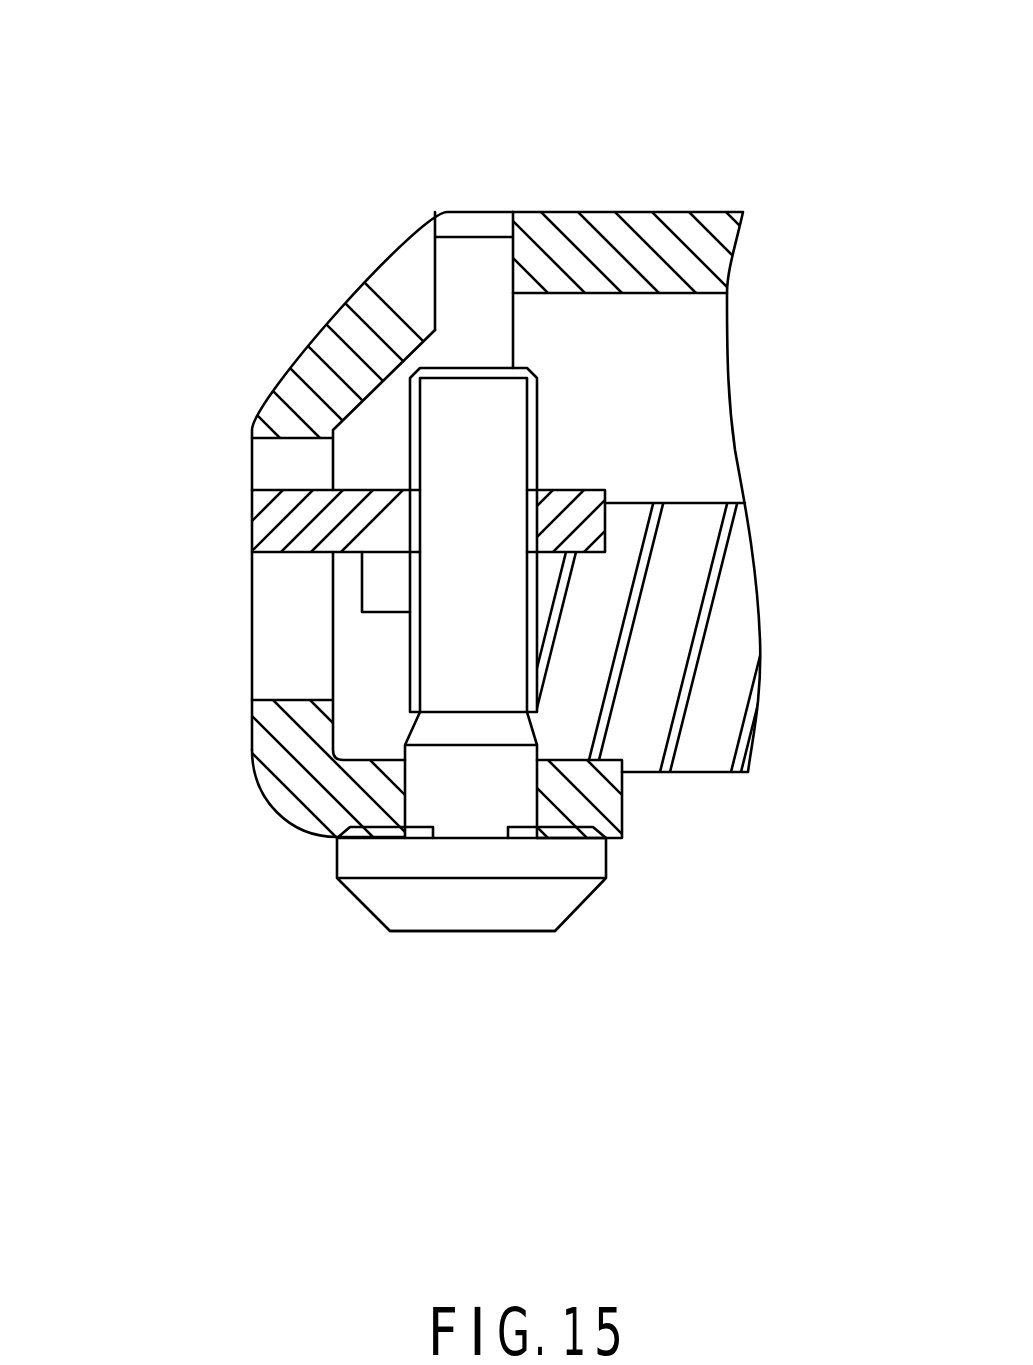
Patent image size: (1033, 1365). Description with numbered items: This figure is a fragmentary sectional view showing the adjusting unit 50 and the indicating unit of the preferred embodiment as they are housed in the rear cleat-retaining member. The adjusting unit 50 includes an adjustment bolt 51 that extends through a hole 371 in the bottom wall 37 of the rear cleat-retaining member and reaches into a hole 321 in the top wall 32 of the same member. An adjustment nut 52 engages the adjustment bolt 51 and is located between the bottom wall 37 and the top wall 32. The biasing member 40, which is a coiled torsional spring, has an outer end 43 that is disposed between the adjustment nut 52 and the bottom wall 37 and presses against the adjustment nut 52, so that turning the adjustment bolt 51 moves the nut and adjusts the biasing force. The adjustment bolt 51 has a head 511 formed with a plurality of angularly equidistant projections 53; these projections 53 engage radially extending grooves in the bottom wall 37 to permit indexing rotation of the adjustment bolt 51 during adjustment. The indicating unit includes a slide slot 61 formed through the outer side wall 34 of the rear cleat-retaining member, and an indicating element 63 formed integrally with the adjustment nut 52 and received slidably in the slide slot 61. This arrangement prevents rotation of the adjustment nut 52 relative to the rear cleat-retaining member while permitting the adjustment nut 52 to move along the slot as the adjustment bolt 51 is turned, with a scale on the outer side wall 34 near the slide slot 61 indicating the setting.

The top wall 32 is at (683, 215).
The hole 321 is at (470, 225).
The adjustment bolt 51 is at (520, 405).
The adjustment nut 52 is at (597, 503).
The indicating element 63 is at (255, 525).
The outer end 43 is at (368, 600).
The slide slot 61 is at (257, 660).
The outer side wall 34 is at (257, 717).
The hole 371 is at (408, 777).
The bottom wall 37 is at (612, 808).
The biasing member 40 is at (717, 773).
The adjusting unit 50 is at (424, 912).
The head 511 is at (535, 895).
The projections 53 is at (577, 832).